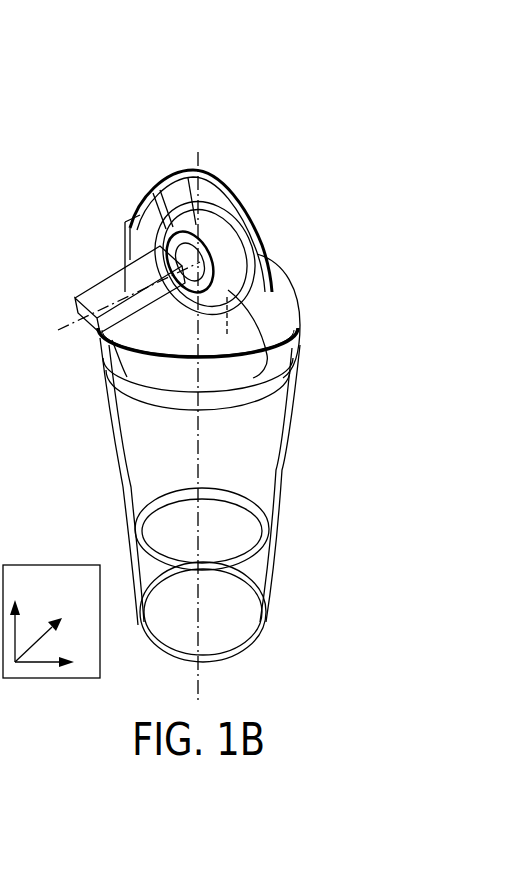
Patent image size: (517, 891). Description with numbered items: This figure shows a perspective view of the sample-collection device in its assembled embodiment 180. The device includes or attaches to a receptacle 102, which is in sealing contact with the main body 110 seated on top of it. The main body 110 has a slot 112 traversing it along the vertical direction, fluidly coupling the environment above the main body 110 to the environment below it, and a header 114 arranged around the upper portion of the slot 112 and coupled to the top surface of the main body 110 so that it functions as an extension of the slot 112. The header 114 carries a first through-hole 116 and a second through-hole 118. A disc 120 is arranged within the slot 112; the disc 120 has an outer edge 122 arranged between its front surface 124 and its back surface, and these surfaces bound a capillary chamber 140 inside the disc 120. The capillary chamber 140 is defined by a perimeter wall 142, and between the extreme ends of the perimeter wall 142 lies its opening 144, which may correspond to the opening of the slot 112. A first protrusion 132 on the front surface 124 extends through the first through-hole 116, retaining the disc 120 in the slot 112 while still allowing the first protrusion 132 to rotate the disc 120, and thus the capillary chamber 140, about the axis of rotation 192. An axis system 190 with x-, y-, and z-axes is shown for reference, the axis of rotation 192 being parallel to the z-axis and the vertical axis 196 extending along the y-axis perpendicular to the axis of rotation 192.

The receptacle 102 is at (304, 468).
The main body 110 is at (145, 358).
The slot 112 is at (253, 285).
The header 114 is at (283, 395).
The first through-hole 116 is at (135, 235).
The second through-hole 118 is at (250, 243).
The disc 120 is at (286, 264).
The outer edge 122 is at (278, 340).
The front surface 124 is at (137, 207).
The first protrusion 132 is at (96, 303).
The capillary chamber 140 is at (262, 212).
The perimeter wall 142 is at (190, 174).
The opening 144 is at (152, 207).
The embodiment 180 is at (285, 80).
The axis system 190 is at (80, 563).
The axis of rotation 192 is at (72, 333).
The vertical axis 196 is at (204, 160).